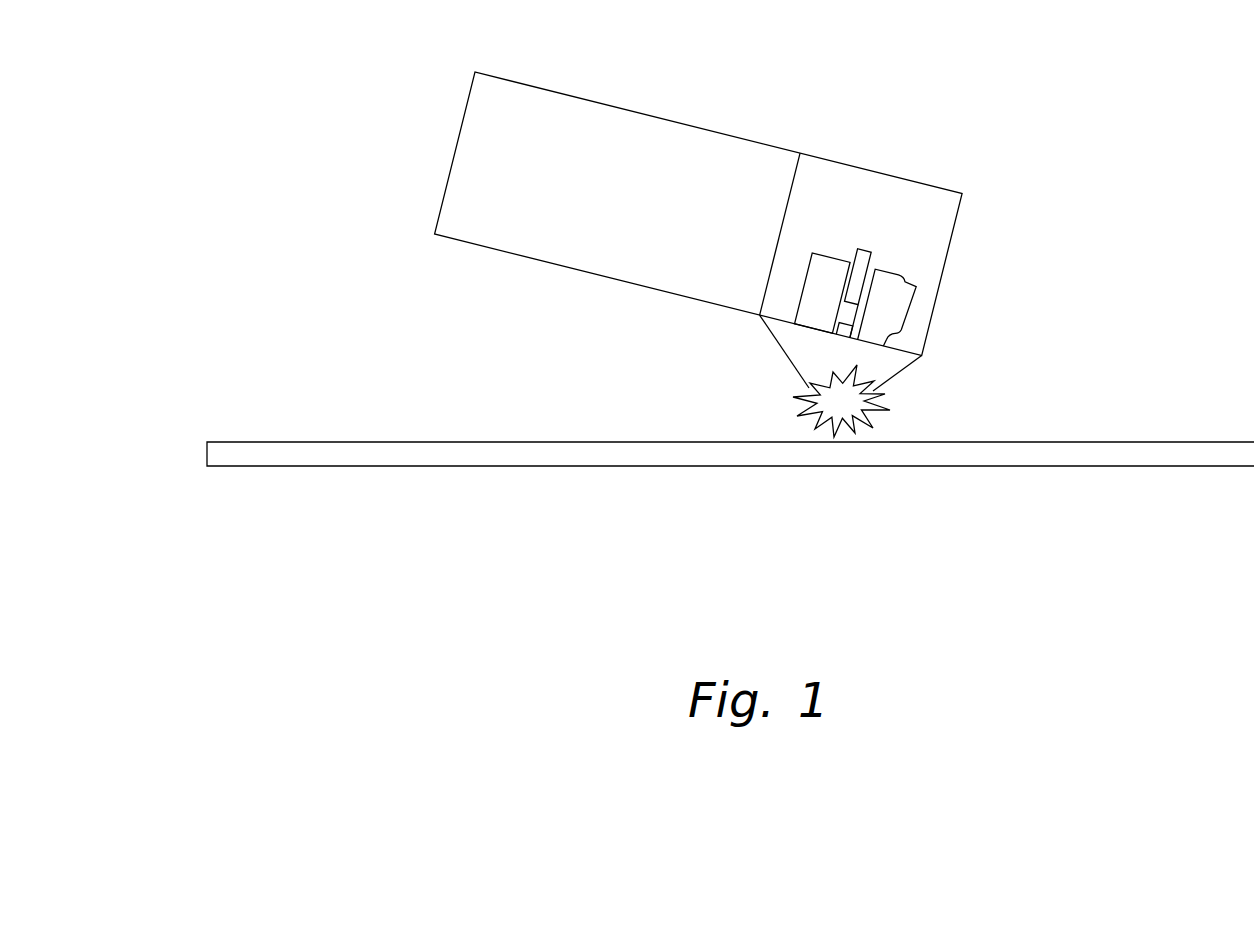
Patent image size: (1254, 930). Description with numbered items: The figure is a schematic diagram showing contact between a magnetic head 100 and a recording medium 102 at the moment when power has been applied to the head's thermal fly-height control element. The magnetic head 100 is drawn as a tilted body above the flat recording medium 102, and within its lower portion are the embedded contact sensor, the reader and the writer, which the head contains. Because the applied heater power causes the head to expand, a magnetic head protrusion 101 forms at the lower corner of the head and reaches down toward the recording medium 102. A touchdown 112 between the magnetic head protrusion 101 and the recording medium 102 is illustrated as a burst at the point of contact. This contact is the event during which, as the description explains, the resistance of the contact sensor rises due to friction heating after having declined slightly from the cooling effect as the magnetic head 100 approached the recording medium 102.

The magnetic head 100 is at (823, 69).
The magnetic head protrusion 101 is at (890, 368).
The recording medium 102 is at (1207, 442).
The touchdown 112 is at (847, 410).